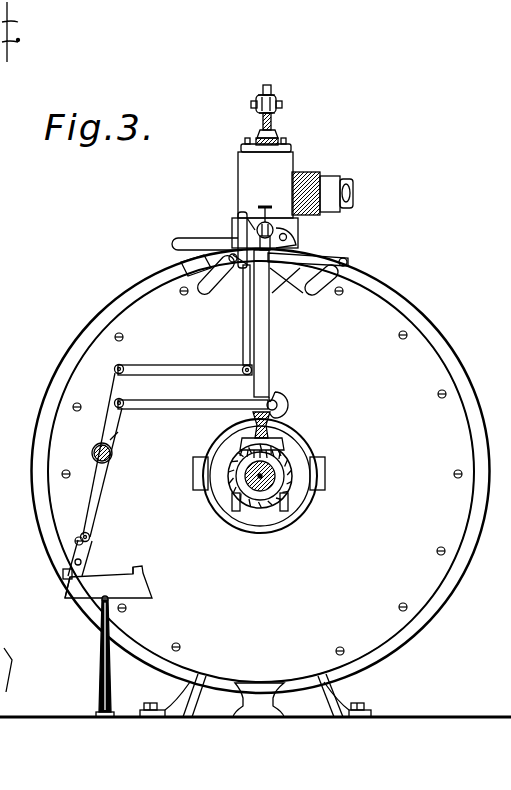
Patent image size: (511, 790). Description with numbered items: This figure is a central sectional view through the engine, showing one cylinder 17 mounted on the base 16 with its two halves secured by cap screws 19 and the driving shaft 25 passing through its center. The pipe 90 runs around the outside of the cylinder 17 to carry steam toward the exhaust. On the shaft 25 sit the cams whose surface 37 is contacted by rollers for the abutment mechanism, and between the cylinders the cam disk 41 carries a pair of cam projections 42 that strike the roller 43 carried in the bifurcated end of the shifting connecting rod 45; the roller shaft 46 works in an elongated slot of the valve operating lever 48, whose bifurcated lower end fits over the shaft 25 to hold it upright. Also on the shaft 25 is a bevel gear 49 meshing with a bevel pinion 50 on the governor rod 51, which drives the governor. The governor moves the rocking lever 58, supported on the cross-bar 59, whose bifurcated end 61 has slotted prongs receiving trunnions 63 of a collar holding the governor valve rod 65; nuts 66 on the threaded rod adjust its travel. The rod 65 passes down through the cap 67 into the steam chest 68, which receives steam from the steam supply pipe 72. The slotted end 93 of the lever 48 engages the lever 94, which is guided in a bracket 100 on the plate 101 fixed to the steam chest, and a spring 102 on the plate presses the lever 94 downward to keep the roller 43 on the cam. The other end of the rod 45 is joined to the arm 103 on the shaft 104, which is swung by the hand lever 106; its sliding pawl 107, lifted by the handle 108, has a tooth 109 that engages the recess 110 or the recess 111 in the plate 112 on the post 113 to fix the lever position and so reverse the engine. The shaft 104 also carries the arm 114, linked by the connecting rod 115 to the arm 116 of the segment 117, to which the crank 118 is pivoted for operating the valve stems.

The base 16 is at (432, 717).
The cylinder 17 is at (261, 471).
The cap screws 19 is at (436, 554).
The driving shaft 25 is at (262, 488).
The cam surface 37 is at (212, 510).
The cam disk 41 is at (207, 473).
The cam projection 42 is at (320, 472).
The roller 43 is at (288, 402).
The shifting connecting rod 45 is at (192, 416).
The roller shaft 46 is at (276, 400).
The valve operating lever 48 is at (270, 365).
The bevel gear 49 is at (310, 473).
The bevel pinion 50 is at (290, 442).
The governor rod 51 is at (285, 420).
The rocking lever 58 is at (262, 112).
The cross-bar 59 is at (290, 146).
The bifurcated end 61 is at (278, 104).
The trunnions 63 is at (255, 105).
The governor valve rod 65 is at (268, 88).
The nuts 66 is at (262, 96).
The cap 67 is at (280, 136).
The steam chest 68 is at (265, 196).
The steam supply pipe 72 is at (354, 193).
The pipe 90 is at (36, 518).
The slotted end 93 is at (268, 215).
The lever 94 is at (287, 238).
The bracket 100 is at (237, 216).
The plate 101 is at (247, 222).
The spring 102 is at (232, 232).
The arm 103 is at (112, 444).
The shaft 104 is at (111, 457).
The lever 106 is at (100, 496).
The sliding pawl 107 is at (86, 554).
The handle 108 is at (90, 536).
The tooth 109 is at (70, 598).
The recess 110 is at (64, 580).
The recess 111 is at (140, 572).
The plate 112 is at (150, 594).
The post 113 is at (99, 668).
The arm 114 is at (114, 373).
The connecting rod 115 is at (185, 381).
The arm 116 is at (244, 330).
The segment 117 is at (336, 256).
The crank 118 is at (259, 289).